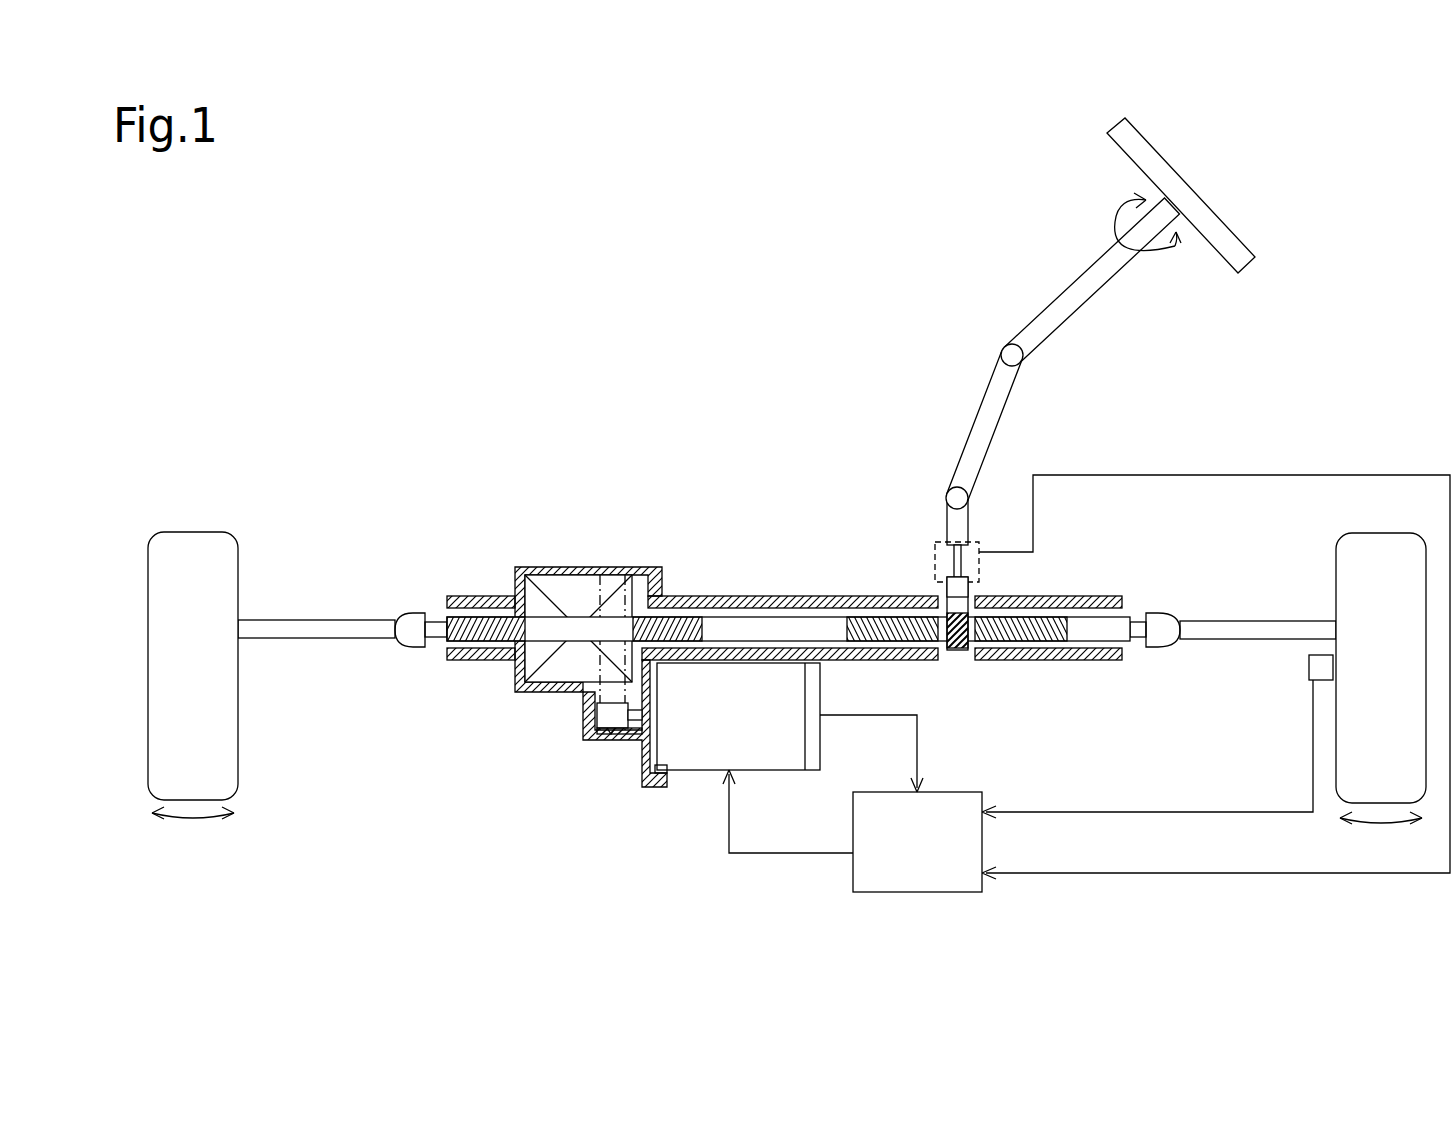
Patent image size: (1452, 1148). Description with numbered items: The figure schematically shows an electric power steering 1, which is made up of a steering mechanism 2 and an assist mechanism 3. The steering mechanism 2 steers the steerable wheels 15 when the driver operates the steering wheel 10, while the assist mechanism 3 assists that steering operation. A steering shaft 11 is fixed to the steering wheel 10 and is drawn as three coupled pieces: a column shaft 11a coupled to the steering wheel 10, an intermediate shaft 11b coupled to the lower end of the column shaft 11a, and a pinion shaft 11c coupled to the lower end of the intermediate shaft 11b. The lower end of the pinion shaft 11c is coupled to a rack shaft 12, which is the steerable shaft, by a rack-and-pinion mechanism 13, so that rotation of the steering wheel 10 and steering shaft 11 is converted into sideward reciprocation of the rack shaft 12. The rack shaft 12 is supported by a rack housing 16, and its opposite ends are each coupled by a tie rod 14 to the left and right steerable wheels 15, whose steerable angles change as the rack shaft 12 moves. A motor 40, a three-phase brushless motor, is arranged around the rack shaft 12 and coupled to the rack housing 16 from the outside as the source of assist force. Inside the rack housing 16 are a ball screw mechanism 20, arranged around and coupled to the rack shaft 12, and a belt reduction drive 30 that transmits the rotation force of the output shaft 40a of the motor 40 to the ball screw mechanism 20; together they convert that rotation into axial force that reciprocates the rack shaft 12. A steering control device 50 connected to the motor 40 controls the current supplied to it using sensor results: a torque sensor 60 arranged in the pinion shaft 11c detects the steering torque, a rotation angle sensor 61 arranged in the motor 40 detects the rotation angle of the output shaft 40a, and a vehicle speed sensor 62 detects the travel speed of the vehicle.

The electric power steering 1 is at (1337, 191).
The steering mechanism 2 is at (670, 300).
The assist mechanism 3 is at (520, 515).
The steering wheel 10 is at (1210, 212).
The steering shaft 11 is at (1013, 387).
The column shaft 11a is at (1088, 272).
The intermediate shaft 11b is at (983, 418).
The pinion shaft 11c is at (945, 520).
The rack shaft 12 is at (1100, 641).
The rack-and-pinion mechanism 13 is at (978, 672).
The tie rod 14 is at (347, 639).
The steerable wheels 15 is at (190, 537).
The rack housing 16 is at (1053, 661).
The ball screw mechanism 20 is at (530, 645).
The belt reduction drive 30 is at (573, 713).
The motor 40 is at (695, 773).
The output shaft 40a is at (633, 740).
The steering control device 50 is at (955, 791).
The torque sensor 60 is at (978, 535).
The rotation angle sensor 61 is at (813, 750).
The vehicle speed sensor 62 is at (1307, 672).